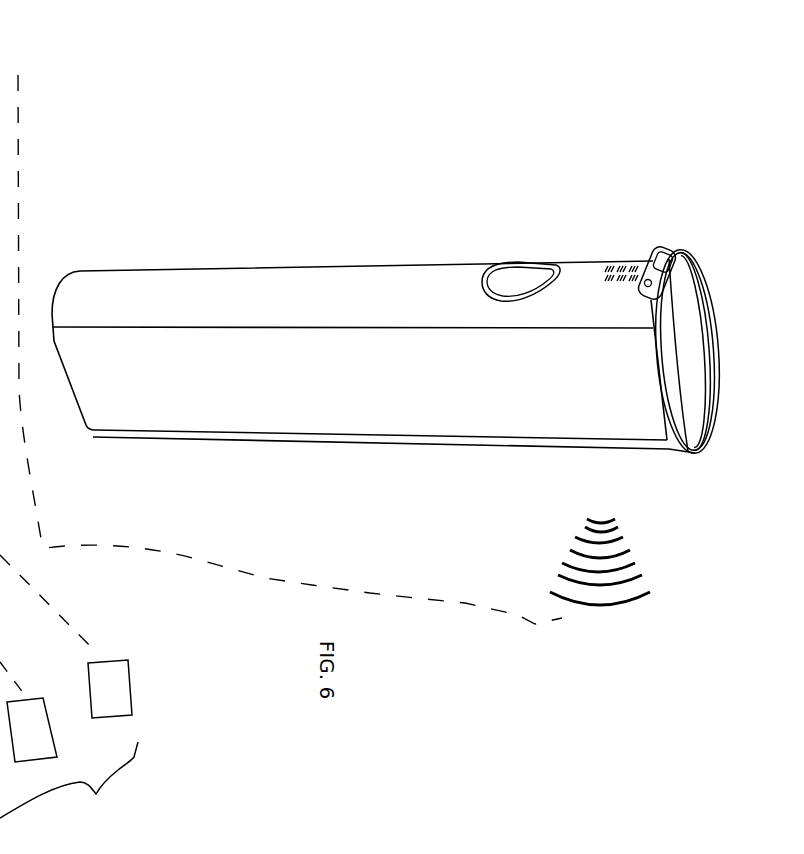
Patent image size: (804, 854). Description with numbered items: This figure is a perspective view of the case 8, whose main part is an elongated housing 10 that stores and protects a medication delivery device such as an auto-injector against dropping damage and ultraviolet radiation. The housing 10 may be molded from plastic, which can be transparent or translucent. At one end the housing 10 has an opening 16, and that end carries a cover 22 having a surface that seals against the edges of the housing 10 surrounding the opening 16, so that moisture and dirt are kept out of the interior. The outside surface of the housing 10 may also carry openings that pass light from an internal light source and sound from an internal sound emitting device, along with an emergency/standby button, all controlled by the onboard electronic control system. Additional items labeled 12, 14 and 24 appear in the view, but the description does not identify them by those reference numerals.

The case 8 is at (705, 193).
The housing 10 is at (255, 360).
The battery 12 is at (69, 711).
The strap 14 is at (69, 785).
The opening 16 is at (519, 283).
The cover 22 is at (697, 387).
The indicator lights 24 is at (626, 261).